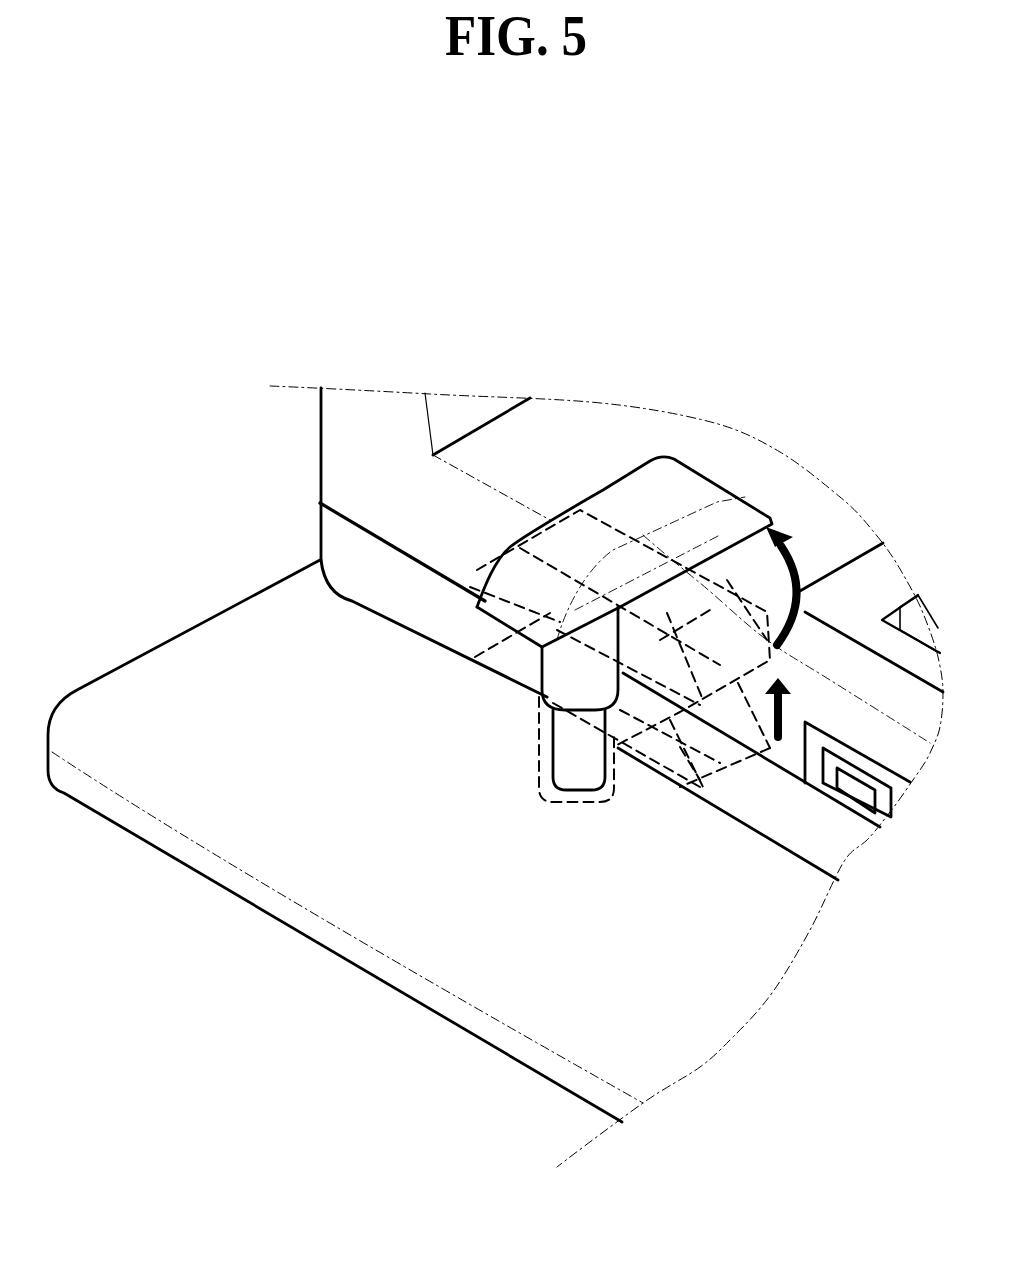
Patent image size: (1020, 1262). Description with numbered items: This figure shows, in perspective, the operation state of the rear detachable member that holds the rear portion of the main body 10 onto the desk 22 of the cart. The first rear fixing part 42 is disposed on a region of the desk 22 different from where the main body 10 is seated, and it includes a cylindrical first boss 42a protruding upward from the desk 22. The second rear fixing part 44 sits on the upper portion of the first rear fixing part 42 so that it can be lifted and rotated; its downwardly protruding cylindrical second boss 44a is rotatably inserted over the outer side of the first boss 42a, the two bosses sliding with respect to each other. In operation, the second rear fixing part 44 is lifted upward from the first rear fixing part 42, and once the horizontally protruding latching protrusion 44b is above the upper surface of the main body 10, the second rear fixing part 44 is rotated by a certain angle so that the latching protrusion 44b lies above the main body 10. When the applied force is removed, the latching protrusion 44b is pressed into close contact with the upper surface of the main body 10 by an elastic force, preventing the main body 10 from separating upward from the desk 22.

The main body 10 is at (338, 453).
The desk 22 is at (548, 1033).
The first rear fixing part 42 is at (426, 843).
The first boss 42a is at (560, 758).
The second rear fixing part 44 is at (534, 567).
The second boss 44a is at (548, 677).
The latching protrusion 44b is at (683, 487).